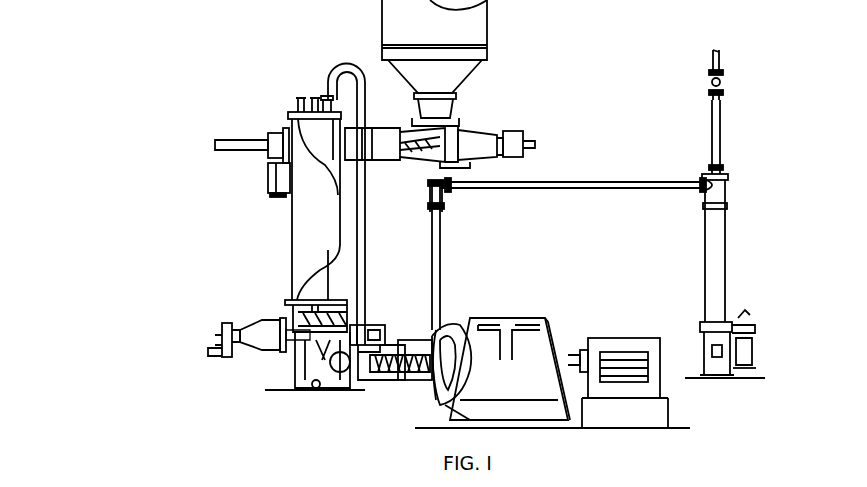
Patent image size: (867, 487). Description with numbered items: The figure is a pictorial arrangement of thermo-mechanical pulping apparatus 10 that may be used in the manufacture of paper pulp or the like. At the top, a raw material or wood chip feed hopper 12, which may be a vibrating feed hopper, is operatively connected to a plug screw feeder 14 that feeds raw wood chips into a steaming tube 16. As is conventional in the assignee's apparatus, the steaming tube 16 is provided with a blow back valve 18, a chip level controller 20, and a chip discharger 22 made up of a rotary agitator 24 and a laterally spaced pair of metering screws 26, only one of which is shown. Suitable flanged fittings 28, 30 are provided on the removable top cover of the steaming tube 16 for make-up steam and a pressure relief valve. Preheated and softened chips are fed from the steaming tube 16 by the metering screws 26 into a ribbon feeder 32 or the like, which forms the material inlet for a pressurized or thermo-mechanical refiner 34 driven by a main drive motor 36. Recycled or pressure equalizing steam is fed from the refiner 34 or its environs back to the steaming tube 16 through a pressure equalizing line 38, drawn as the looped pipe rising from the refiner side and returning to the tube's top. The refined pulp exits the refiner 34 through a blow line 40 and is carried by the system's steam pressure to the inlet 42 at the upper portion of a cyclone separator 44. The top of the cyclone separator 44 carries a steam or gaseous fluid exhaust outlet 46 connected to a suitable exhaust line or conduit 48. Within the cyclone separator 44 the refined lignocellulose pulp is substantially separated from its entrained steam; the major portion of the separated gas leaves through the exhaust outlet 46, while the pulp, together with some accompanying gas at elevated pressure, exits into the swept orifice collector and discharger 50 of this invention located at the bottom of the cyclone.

The thermo-mechanical pulping apparatus 10 is at (566, 100).
The wood chip feed hopper 12 is at (488, 44).
The plug screw feeder 14 is at (460, 128).
The steaming tube 16 is at (292, 247).
The blow back valve 18 is at (278, 132).
The chip level controller 20 is at (268, 182).
The chip discharger 22 is at (260, 312).
The rotary agitator 24 is at (312, 316).
The metering screws 26 is at (372, 330).
The flanged fitting 28 is at (298, 98).
The flanged fitting 30 is at (324, 96).
The ribbon feeder 32 is at (400, 374).
The thermo-mechanical refiner 34 is at (452, 326).
The main drive motor 36 is at (595, 340).
The pressure equalizing line 38 is at (368, 247).
The blow line 40 is at (443, 272).
The inlet 42 is at (705, 188).
The cyclone separator 44 is at (730, 255).
The exhaust outlet 46 is at (724, 168).
The exhaust line 48 is at (723, 68).
The swept orifice collector and discharger 50 is at (704, 325).